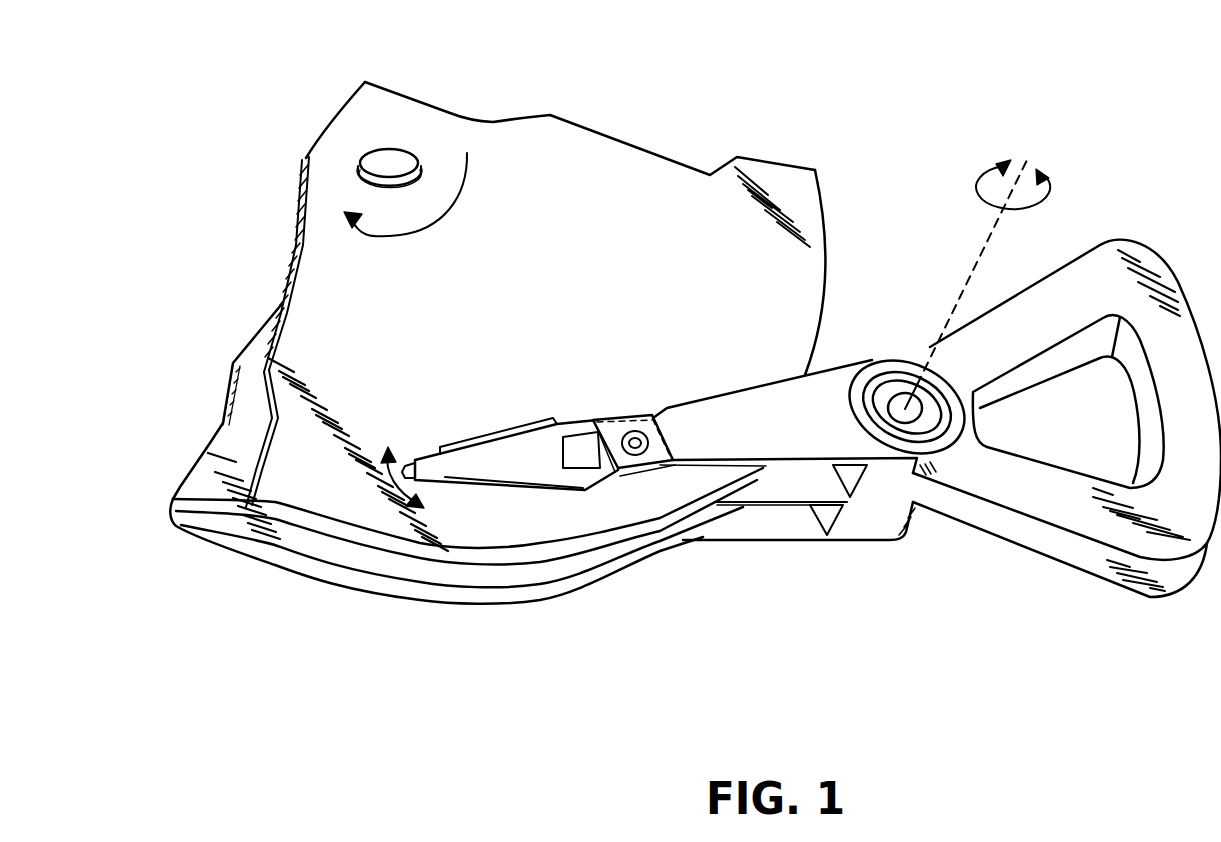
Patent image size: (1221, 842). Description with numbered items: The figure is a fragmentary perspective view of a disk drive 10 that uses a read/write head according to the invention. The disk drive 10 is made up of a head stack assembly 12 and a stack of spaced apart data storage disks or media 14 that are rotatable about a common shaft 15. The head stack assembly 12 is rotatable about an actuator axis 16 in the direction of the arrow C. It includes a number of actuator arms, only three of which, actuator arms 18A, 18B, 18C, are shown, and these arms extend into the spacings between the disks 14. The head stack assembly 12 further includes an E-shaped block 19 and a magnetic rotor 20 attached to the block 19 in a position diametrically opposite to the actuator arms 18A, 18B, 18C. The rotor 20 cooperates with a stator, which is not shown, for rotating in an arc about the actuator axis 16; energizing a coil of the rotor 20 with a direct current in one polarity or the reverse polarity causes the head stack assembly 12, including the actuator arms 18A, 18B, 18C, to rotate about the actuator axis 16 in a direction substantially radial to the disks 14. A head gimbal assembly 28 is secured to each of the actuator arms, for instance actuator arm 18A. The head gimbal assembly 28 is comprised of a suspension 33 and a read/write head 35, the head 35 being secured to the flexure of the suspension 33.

The disk drive 10 is at (681, 44).
The head stack assembly 12 is at (868, 576).
The data storage disks 14 is at (581, 215).
The common shaft 15 is at (372, 160).
The actuator axis 16 is at (995, 228).
The actuator arm 18A is at (766, 385).
The actuator arm 18B is at (757, 498).
The actuator arm 18C is at (788, 537).
The E-shaped block 19 is at (882, 530).
The magnetic rotor 20 is at (1080, 548).
The head gimbal assembly 28 is at (504, 413).
The suspension 33 is at (543, 477).
The read/write head 35 is at (403, 478).